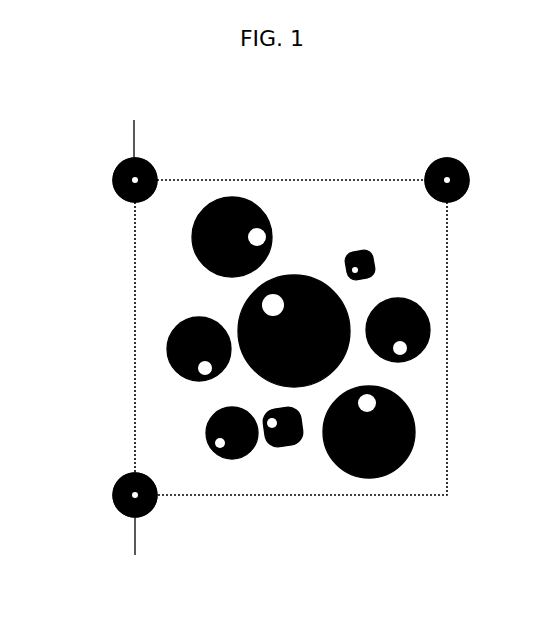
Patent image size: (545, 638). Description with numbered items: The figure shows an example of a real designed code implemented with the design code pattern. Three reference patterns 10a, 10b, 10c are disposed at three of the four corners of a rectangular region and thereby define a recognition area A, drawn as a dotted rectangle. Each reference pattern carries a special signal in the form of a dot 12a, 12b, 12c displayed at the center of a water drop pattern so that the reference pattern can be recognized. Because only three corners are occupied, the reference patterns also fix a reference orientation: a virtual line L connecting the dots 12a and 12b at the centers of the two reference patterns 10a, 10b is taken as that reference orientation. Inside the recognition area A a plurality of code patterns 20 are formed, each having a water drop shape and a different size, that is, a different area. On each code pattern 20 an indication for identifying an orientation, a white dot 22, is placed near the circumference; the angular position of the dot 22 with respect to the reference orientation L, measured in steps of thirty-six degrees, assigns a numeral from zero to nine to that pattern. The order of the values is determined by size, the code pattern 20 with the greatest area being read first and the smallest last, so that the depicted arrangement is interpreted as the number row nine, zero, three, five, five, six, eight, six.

The reference pattern 10a is at (118, 166).
The dot 12a is at (152, 166).
The reference pattern 10b is at (118, 512).
The dot 12b is at (152, 512).
The reference pattern 10c is at (464, 166).
The dot 12c is at (428, 166).
The code pattern 20 is at (232, 197).
The dot 22 is at (268, 225).
The recognition area A is at (447, 340).
The virtual line L is at (133, 328).